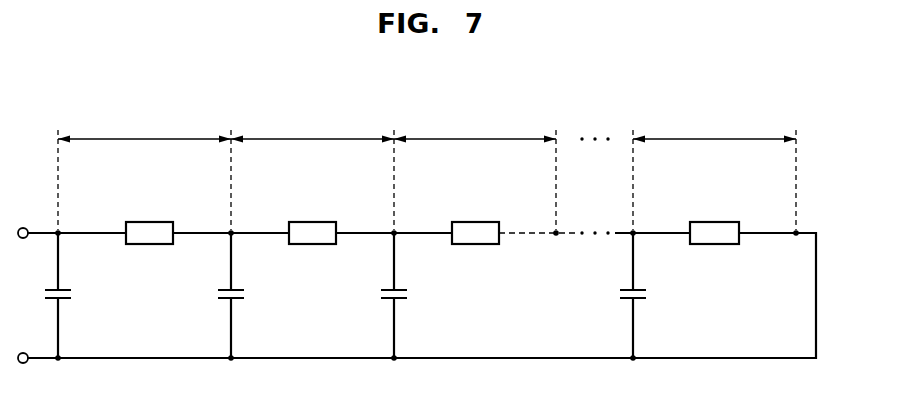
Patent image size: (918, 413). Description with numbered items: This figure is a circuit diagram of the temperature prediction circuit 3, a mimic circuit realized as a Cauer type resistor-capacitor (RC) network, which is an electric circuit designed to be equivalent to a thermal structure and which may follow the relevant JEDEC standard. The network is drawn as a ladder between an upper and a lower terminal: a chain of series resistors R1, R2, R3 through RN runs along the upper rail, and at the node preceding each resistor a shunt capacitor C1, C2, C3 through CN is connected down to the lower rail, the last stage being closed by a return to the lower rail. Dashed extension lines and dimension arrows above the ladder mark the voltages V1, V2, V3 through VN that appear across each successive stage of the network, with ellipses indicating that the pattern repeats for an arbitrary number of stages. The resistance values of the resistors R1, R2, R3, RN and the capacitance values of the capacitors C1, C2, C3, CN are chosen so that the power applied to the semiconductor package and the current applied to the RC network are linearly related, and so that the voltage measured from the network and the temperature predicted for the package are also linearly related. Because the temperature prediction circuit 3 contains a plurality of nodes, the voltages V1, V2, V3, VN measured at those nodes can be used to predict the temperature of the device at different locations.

The temperature prediction circuit 3 is at (778, 92).
The resistor R1 is at (149, 219).
The resistor R2 is at (312, 219).
The resistor R3 is at (475, 219).
The resistor RN is at (714, 219).
The capacitor C1 is at (72, 295).
The capacitor C2 is at (245, 295).
The capacitor C3 is at (408, 295).
The capacitor CN is at (647, 295).
The node voltage V1 is at (144, 125).
The node voltage V2 is at (312, 125).
The node voltage V3 is at (475, 125).
The node voltage VN is at (714, 125).